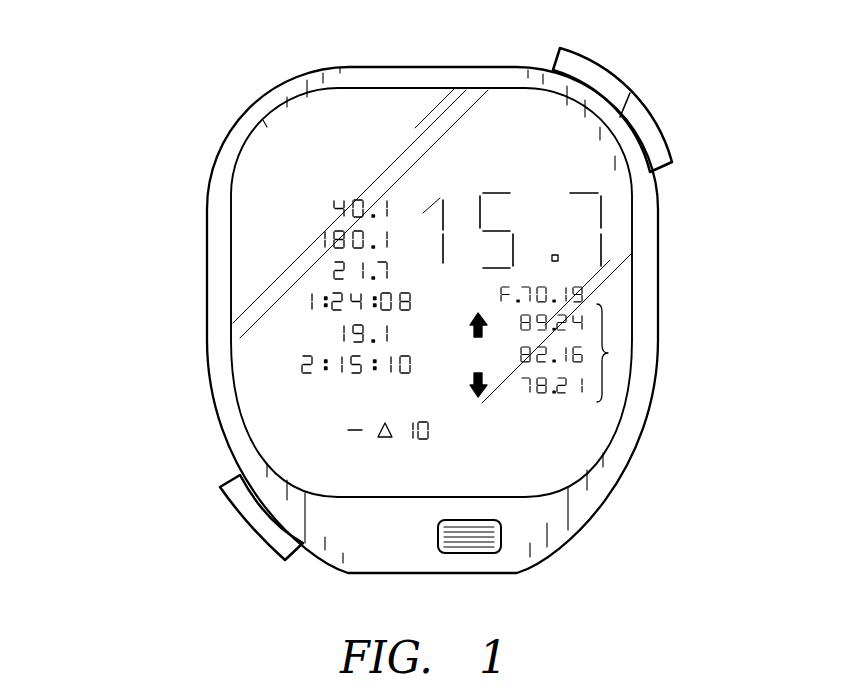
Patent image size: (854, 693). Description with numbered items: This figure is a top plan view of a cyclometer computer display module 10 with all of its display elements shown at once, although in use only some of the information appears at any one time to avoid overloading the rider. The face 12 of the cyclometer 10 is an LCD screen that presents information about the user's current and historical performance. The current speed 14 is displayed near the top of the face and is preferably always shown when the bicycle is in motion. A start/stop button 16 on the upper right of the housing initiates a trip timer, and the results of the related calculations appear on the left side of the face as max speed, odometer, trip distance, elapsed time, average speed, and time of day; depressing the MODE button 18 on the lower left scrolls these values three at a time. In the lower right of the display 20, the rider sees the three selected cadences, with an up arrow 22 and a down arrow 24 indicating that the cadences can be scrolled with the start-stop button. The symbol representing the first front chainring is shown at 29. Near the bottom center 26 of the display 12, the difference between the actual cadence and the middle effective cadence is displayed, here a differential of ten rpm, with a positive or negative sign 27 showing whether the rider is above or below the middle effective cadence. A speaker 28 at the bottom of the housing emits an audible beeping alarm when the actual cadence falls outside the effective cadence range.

The cyclometer computer display module 10 is at (218, 89).
The face 12 is at (463, 133).
The current speed 14 is at (607, 198).
The start/stop button 16 is at (656, 128).
The MODE button 18 is at (272, 547).
The lower right of the display 20 is at (620, 340).
The up arrow 22 is at (463, 323).
The down arrow 24 is at (485, 395).
The bottom center 26 is at (533, 430).
The positive or negative sign 27 is at (330, 437).
The speaker 28 is at (493, 553).
The first chainring indicator 29 is at (540, 270).